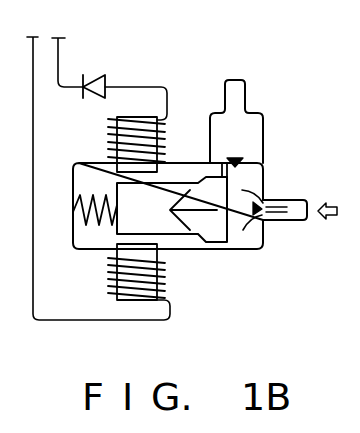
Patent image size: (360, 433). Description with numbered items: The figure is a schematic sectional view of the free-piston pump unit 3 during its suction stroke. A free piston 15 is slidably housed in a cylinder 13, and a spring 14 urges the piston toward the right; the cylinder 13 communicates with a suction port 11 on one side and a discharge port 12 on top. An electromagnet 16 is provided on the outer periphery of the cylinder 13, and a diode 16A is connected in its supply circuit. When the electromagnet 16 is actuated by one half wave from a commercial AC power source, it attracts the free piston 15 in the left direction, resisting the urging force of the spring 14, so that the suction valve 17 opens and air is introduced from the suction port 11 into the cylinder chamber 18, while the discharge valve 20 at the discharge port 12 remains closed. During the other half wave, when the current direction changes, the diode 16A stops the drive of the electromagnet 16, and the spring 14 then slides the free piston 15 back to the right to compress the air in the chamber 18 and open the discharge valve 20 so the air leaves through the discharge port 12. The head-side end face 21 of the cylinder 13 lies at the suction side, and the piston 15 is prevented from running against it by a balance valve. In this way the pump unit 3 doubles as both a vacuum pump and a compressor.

The free-piston pump unit 3 is at (88, 152).
The suction port 11 is at (294, 222).
The discharge port 12 is at (237, 113).
The cylinder 13 is at (210, 249).
The spring 14 is at (95, 228).
The free piston 15 is at (180, 237).
The electromagnet 16 is at (132, 300).
The diode 16A is at (105, 77).
The suction valve 17 is at (266, 246).
The cylinder chamber 18 is at (258, 180).
The discharge valve 20 is at (242, 152).
The head-side end face 21 is at (266, 189).